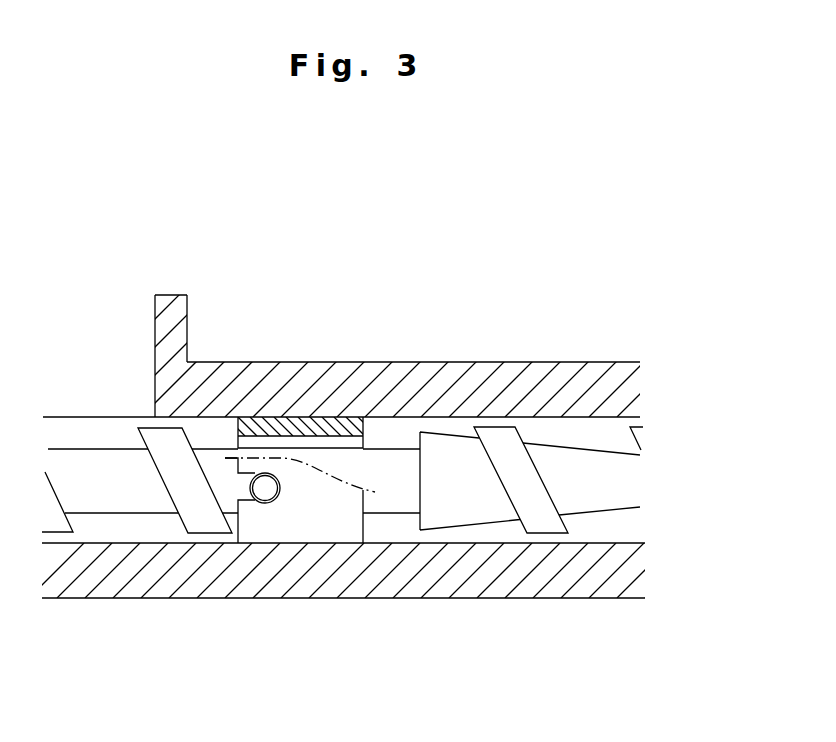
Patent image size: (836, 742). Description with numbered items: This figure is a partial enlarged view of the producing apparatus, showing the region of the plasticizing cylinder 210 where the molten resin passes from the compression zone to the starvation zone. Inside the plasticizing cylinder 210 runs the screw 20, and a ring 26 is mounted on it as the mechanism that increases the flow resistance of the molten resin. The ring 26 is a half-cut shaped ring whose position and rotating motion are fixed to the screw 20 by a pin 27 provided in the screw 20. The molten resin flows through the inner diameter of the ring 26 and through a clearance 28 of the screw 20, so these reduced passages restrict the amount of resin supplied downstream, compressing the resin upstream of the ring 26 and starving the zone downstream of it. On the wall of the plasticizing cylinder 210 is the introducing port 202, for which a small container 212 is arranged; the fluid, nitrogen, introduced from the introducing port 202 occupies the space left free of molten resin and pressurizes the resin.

The screw 20 is at (592, 483).
The ring 26 is at (323, 522).
The pin 27 is at (262, 491).
The clearance 28 is at (350, 442).
The introducing port 202 is at (153, 387).
The plasticizing cylinder 210 is at (527, 380).
The small container 212 is at (172, 317).